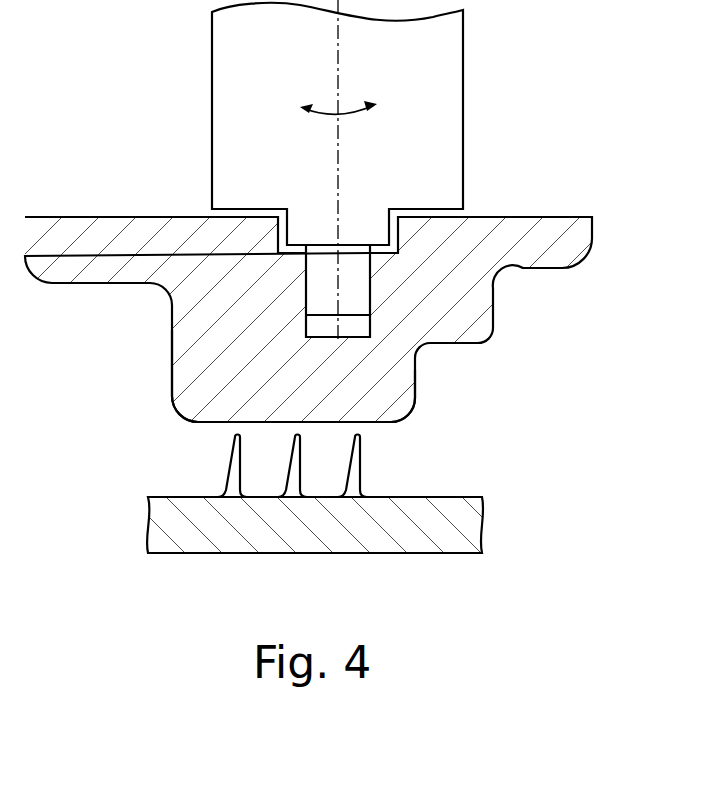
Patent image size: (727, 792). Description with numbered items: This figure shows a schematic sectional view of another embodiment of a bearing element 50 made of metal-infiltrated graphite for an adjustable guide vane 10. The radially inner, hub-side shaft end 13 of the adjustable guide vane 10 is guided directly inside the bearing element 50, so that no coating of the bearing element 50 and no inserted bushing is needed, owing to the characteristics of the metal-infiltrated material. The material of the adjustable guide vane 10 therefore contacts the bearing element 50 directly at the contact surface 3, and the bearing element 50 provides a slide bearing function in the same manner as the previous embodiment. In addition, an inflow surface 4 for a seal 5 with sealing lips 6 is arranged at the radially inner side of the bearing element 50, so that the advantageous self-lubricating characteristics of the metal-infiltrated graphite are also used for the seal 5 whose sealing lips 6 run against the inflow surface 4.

The adjustable guide vane 10 is at (450, 123).
The bearing element 50 is at (477, 320).
The shaft end 13 is at (352, 305).
The contact surface 3 is at (306, 310).
The inflow surface 4 is at (378, 422).
The sealing lips 6 is at (233, 449).
The seal 5 is at (206, 561).